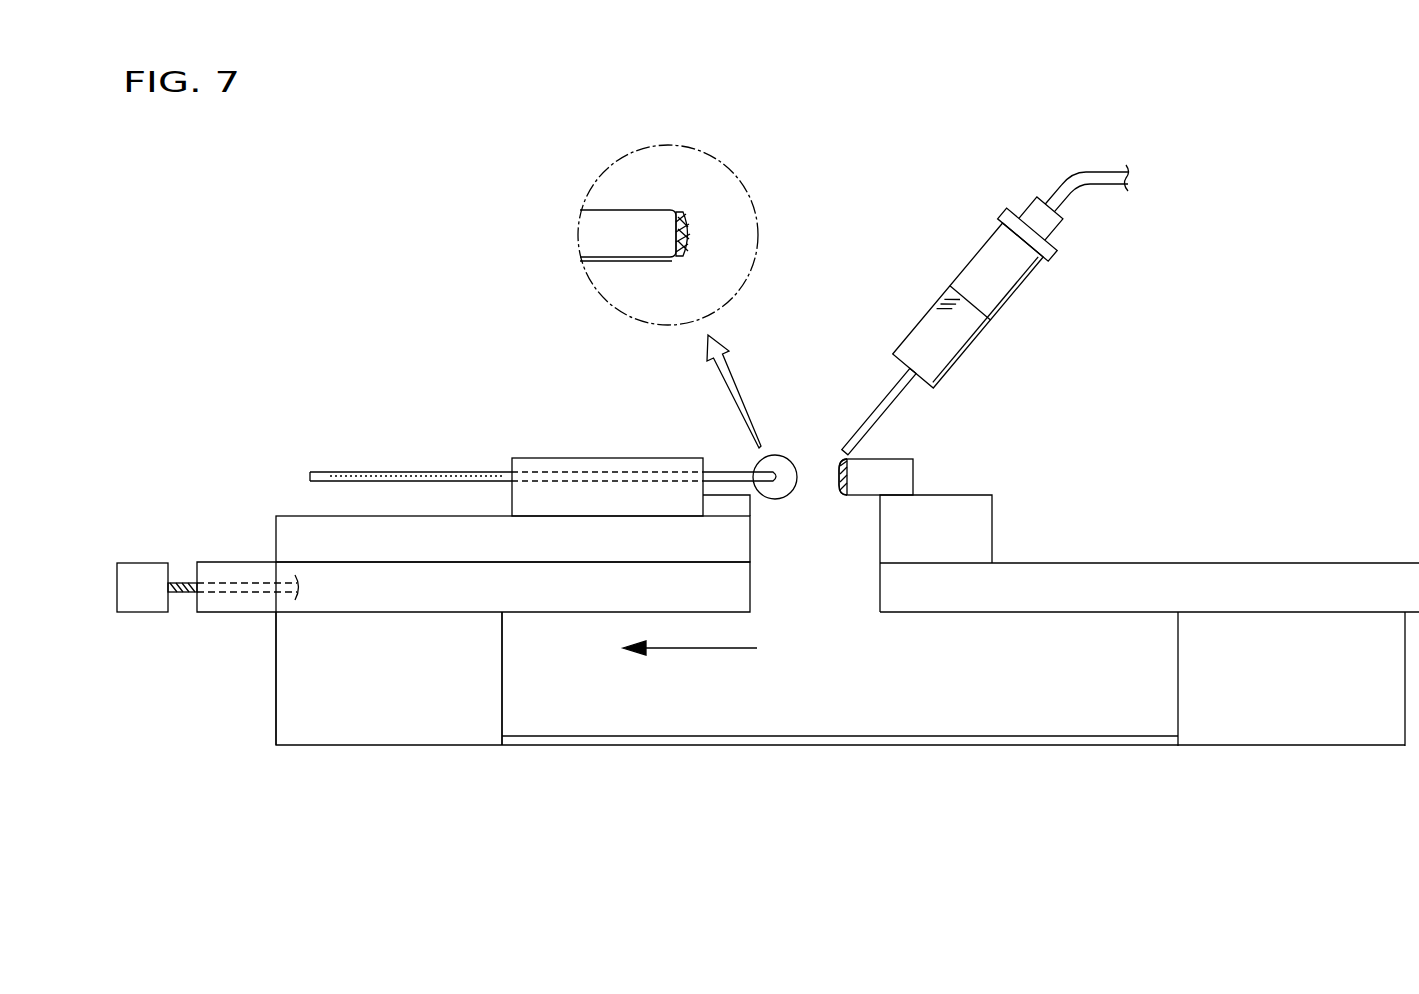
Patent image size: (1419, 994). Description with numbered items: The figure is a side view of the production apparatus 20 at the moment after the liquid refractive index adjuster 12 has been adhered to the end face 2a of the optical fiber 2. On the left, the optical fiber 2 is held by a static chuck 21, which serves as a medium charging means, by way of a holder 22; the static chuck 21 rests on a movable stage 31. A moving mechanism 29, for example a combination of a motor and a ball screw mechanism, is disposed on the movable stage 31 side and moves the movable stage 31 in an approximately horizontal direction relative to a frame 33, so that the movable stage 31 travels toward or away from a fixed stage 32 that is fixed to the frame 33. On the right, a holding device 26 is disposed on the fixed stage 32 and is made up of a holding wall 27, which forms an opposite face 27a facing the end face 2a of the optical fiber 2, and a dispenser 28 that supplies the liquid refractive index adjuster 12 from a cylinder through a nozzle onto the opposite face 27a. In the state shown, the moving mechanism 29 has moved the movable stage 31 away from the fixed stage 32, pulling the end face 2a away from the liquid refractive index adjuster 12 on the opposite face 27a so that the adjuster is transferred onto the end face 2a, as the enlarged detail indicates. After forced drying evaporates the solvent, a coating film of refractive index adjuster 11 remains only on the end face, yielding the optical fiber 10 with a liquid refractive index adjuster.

The optical fiber 2 is at (397, 468).
The end face 2a is at (691, 226).
The optical fiber with a liquid refractive index adjuster 10 is at (486, 471).
The refractive index adjuster 11 is at (695, 265).
The liquid refractive index adjuster 12 is at (690, 260).
The production apparatus 20 is at (480, 324).
The static chuck 21 is at (274, 522).
The holder 22 is at (588, 456).
The holding device 26 is at (1083, 360).
The holding wall 27 is at (904, 453).
The opposite face 27a is at (838, 474).
The dispenser 28 is at (1009, 297).
The moving mechanism 29 is at (140, 562).
The movable stage 31 is at (540, 597).
The fixed stage 32 is at (1062, 597).
The frame 33 is at (374, 730).